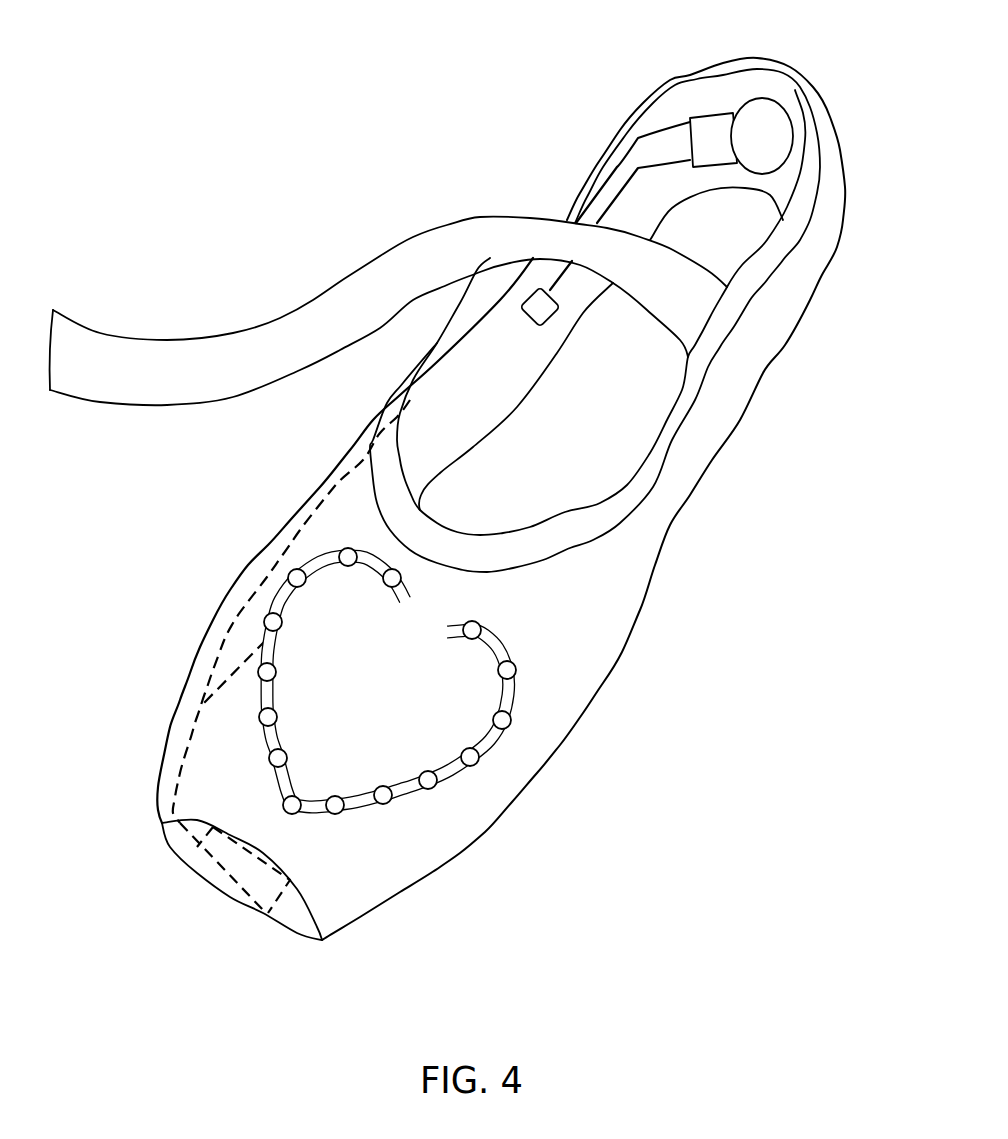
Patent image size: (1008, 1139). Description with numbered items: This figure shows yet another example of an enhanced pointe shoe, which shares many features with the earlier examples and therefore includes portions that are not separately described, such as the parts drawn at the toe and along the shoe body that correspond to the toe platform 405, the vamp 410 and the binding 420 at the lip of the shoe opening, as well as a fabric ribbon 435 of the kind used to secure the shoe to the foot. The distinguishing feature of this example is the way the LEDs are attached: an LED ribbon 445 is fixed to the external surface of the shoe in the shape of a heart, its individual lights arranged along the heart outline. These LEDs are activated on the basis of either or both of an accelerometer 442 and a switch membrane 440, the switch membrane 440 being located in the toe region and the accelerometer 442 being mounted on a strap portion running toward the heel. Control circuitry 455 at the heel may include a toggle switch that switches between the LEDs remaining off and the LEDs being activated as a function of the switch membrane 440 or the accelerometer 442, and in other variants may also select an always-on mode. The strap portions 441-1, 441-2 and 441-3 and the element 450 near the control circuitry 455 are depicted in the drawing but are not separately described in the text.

The toe platform 405 is at (301, 920).
The shoe upper body 410 is at (340, 757).
The binding around shoe opening 420 is at (620, 497).
The ribbon 435 is at (127, 390).
The switch membrane 440 is at (240, 870).
The first strap portion 441-1 is at (617, 150).
The second strap portion 441-2 is at (613, 192).
The third strap portion (hidden) 441-3 is at (247, 667).
The accelerometer 442 is at (530, 318).
The LED ribbon 445 is at (490, 743).
The button 450 is at (760, 128).
The control circuitry 455 is at (717, 128).